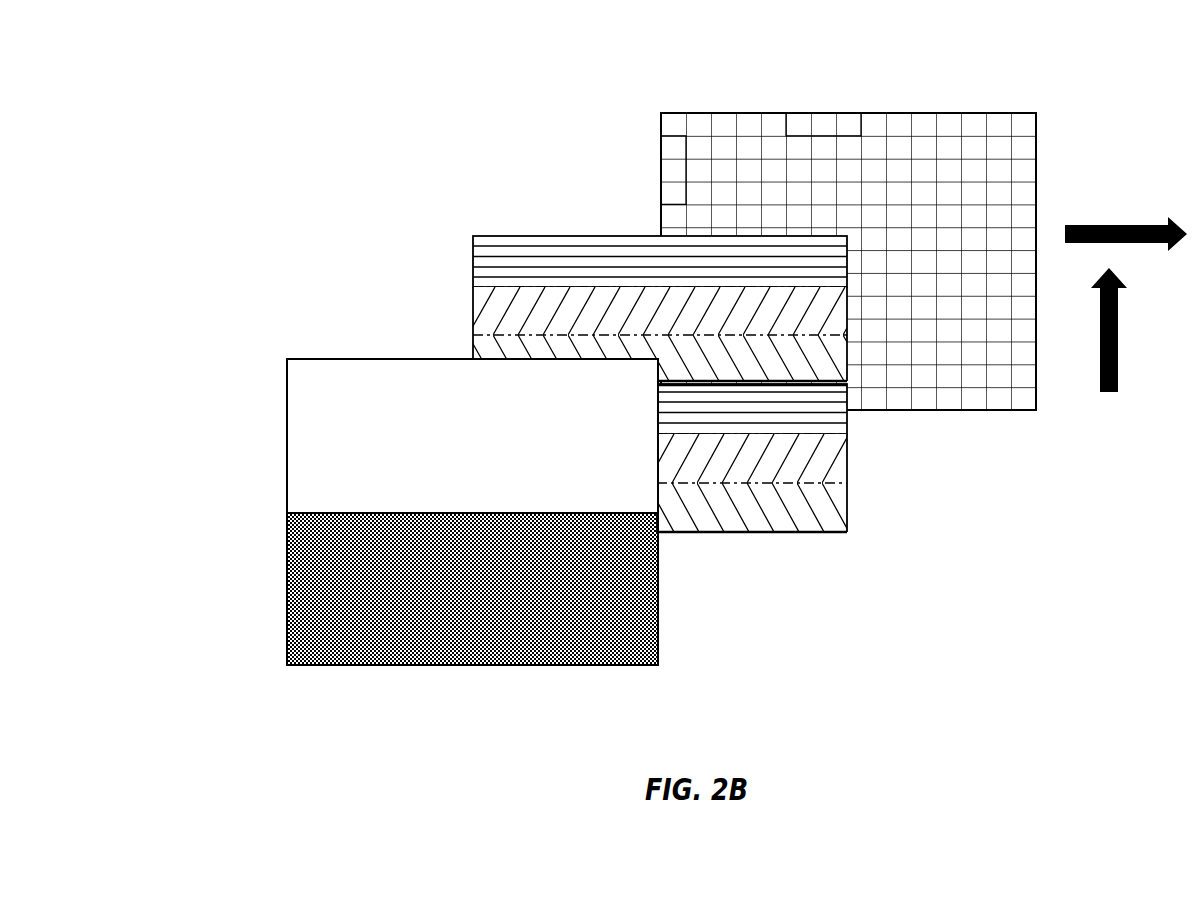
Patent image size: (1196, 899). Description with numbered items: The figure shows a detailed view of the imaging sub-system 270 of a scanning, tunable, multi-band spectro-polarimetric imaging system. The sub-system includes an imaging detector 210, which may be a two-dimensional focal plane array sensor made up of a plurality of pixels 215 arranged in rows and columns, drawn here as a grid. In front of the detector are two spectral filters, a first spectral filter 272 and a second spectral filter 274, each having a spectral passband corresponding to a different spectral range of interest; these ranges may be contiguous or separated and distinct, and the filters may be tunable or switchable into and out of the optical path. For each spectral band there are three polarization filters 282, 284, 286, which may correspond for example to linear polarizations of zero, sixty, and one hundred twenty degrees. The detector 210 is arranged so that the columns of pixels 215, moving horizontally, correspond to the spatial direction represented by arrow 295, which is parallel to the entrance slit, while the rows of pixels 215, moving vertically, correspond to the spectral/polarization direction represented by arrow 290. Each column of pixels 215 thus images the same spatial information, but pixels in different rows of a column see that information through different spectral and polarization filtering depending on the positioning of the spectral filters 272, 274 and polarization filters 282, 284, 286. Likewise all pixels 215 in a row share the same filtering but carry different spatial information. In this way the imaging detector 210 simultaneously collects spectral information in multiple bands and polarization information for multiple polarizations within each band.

The imaging sub-system 270 is at (291, 104).
The imaging detector 210 is at (1047, 107).
The pixels 215 is at (841, 107).
The first polarization filter 282 is at (464, 259).
The second polarization filter 284 is at (464, 303).
The third polarization filter 286 is at (464, 351).
The second spectral filter 274 is at (275, 439).
The first spectral filter 272 is at (273, 585).
The spatial direction arrow 295 is at (1126, 222).
The spectral/polarization direction arrow 290 is at (1125, 330).